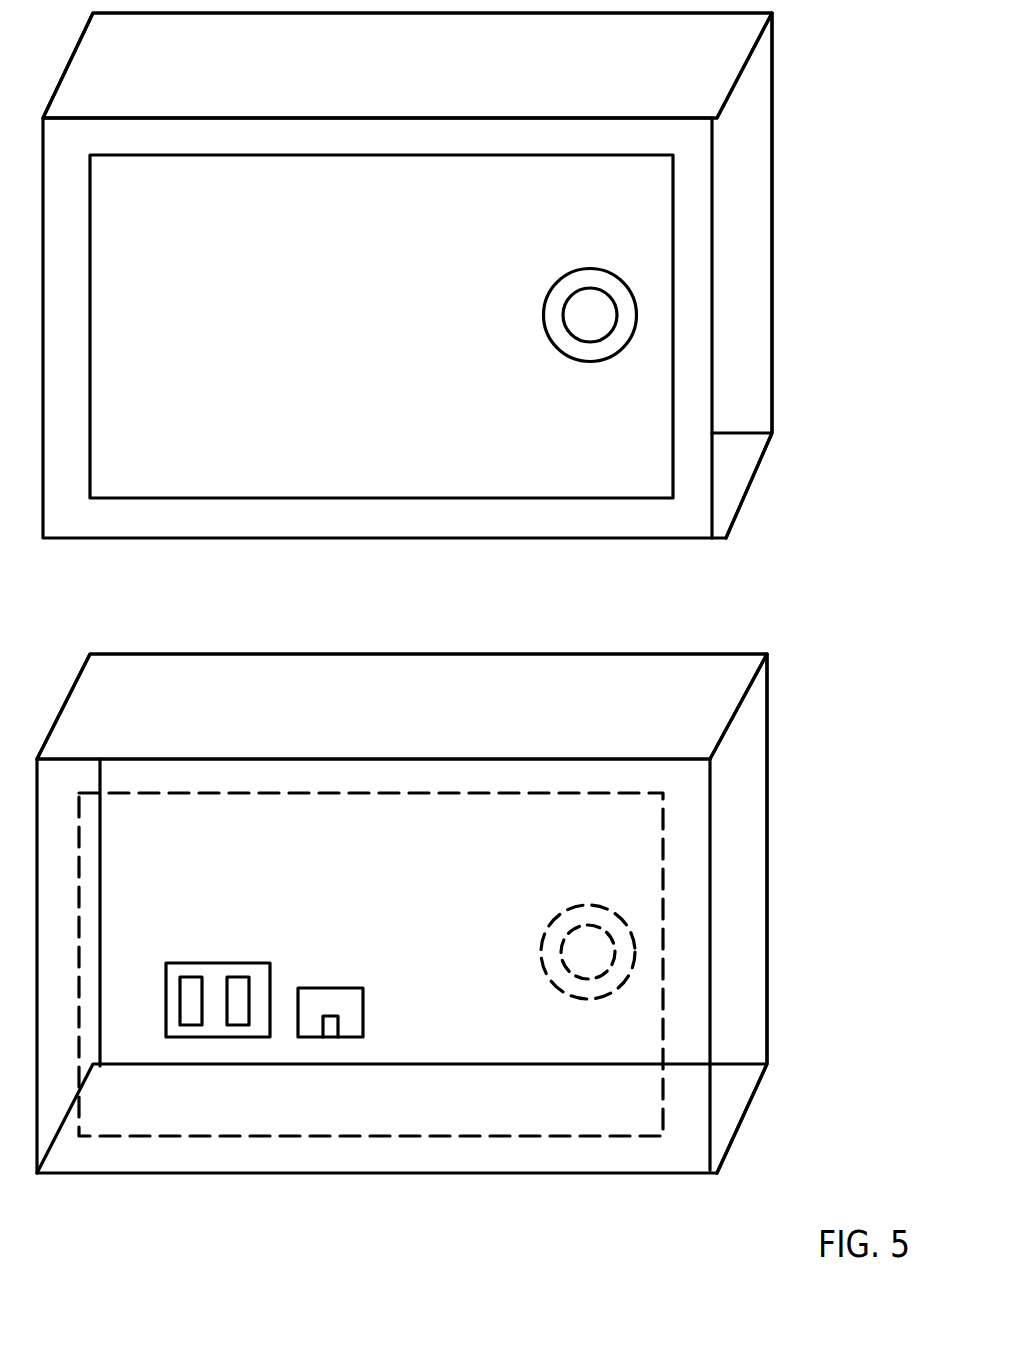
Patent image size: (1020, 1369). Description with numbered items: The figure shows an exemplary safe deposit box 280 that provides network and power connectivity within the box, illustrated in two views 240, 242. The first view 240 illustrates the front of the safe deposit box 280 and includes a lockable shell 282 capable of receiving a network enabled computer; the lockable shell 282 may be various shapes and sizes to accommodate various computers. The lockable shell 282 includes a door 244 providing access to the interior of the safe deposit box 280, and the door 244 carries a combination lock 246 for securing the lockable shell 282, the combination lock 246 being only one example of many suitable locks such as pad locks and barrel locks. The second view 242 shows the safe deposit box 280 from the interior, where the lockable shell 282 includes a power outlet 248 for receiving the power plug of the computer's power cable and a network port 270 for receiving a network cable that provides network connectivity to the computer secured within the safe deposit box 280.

The first view 240 is at (772, 228).
The second view 242 is at (767, 858).
The door 244 is at (205, 261).
The combination lock 246 is at (543, 312).
The power outlet 248 is at (216, 962).
The network port 270 is at (330, 988).
The safe deposit box 280 is at (377, 540).
The lockable shell 282 is at (173, 77).